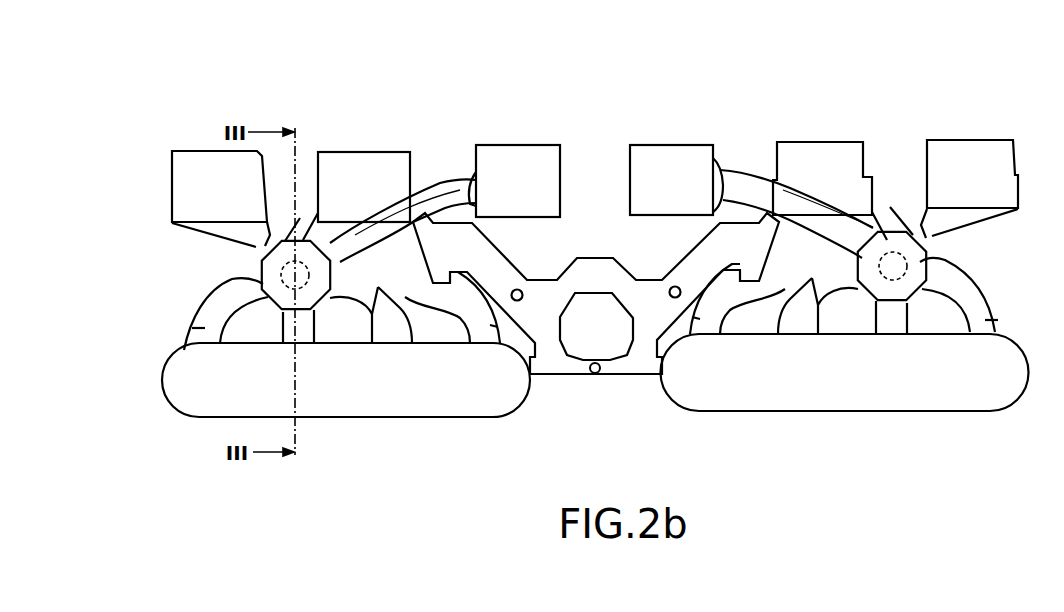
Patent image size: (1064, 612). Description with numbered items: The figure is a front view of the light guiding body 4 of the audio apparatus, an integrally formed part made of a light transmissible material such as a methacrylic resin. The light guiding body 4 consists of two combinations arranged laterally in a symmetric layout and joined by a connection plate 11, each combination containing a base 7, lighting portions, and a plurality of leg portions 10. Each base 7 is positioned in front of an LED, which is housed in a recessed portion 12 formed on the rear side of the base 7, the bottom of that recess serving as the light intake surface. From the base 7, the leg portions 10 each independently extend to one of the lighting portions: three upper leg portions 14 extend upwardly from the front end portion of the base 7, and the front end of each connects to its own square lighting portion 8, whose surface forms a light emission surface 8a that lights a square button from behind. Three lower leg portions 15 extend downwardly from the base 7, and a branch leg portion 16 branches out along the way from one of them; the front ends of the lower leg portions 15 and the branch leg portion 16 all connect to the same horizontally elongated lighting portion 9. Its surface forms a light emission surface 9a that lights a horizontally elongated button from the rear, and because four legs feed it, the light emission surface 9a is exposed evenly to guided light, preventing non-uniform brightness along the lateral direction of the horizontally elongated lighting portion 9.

The light guiding body 4 is at (846, 82).
The base 7 is at (928, 257).
The square lighting portion 8 is at (183, 157).
The light emission surface 8a is at (200, 198).
The horizontally elongated lighting portion 9 is at (400, 418).
The light emission surface 9a is at (330, 397).
The leg portion 10 is at (595, 322).
The connection plate 11 is at (625, 368).
The recessed portion 12 is at (280, 287).
The upper leg portion 14 is at (301, 220).
The lower leg portion 15 is at (287, 323).
The branch leg portion 16 is at (443, 344).